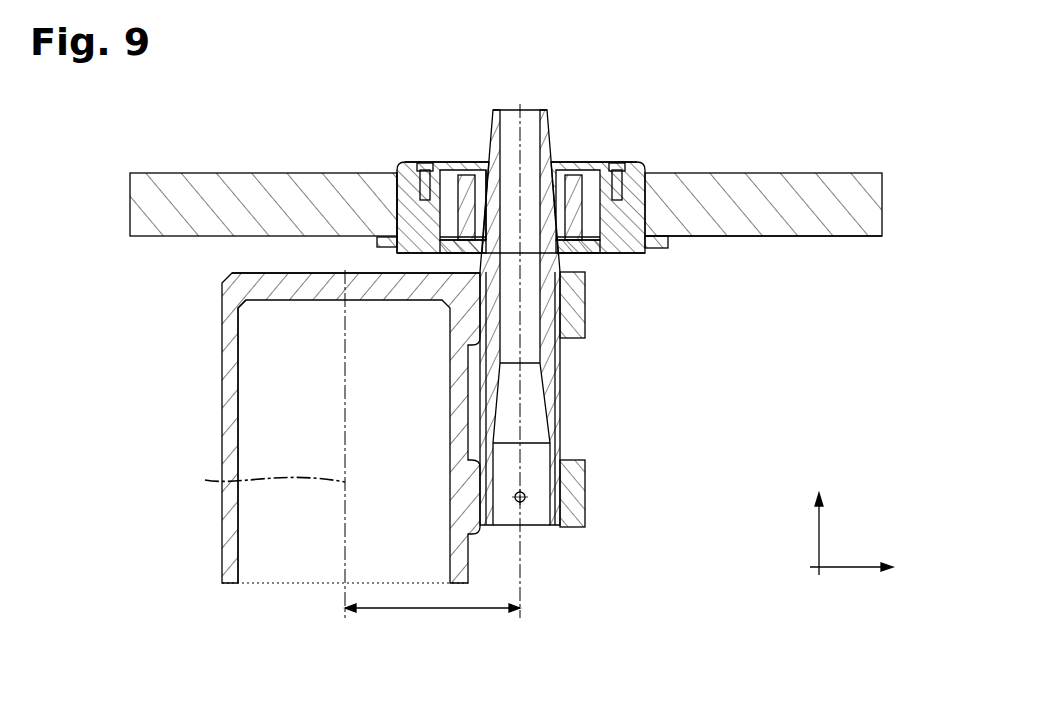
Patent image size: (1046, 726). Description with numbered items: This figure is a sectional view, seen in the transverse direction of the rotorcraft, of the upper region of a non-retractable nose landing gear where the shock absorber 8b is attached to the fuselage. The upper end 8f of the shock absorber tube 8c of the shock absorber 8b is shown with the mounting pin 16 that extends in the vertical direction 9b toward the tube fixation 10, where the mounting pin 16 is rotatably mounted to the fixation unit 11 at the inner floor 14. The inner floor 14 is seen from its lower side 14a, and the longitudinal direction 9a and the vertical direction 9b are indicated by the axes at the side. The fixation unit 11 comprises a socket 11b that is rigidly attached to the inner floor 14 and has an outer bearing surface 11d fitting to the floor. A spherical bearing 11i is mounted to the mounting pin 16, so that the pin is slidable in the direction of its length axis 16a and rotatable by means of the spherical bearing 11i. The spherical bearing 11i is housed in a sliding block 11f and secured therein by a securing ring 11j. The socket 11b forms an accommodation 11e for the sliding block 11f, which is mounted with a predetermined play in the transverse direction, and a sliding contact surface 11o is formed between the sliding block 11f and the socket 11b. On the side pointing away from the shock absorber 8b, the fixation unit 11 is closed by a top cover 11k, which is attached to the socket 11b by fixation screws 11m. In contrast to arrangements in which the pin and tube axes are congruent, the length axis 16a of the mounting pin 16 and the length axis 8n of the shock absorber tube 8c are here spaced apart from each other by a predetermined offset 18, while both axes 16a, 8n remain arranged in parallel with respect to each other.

The shock absorber 8b is at (208, 372).
The shock absorber tube 8c is at (230, 420).
The upper end 8f is at (270, 261).
The length axis 8n is at (205, 480).
The longitudinal direction 9a is at (858, 567).
The vertical direction 9b is at (819, 547).
The tube fixation 10 is at (615, 110).
The fixation unit 11 is at (443, 136).
The socket 11b is at (640, 167).
The outer bearing surface 11d is at (387, 205).
The accommodation 11e is at (611, 248).
The sliding block 11f is at (443, 181).
The spherical bearing 11i is at (475, 190).
The securing ring 11j is at (592, 210).
The top cover 11k is at (410, 160).
The fixation screws 11m is at (420, 183).
The sliding contact surface 11o is at (453, 223).
The inner floor 14 is at (157, 200).
The lower side 14a is at (845, 252).
The mounting pin 16 is at (553, 138).
The length axis 16a is at (519, 143).
The predetermined offset 18 is at (432, 612).